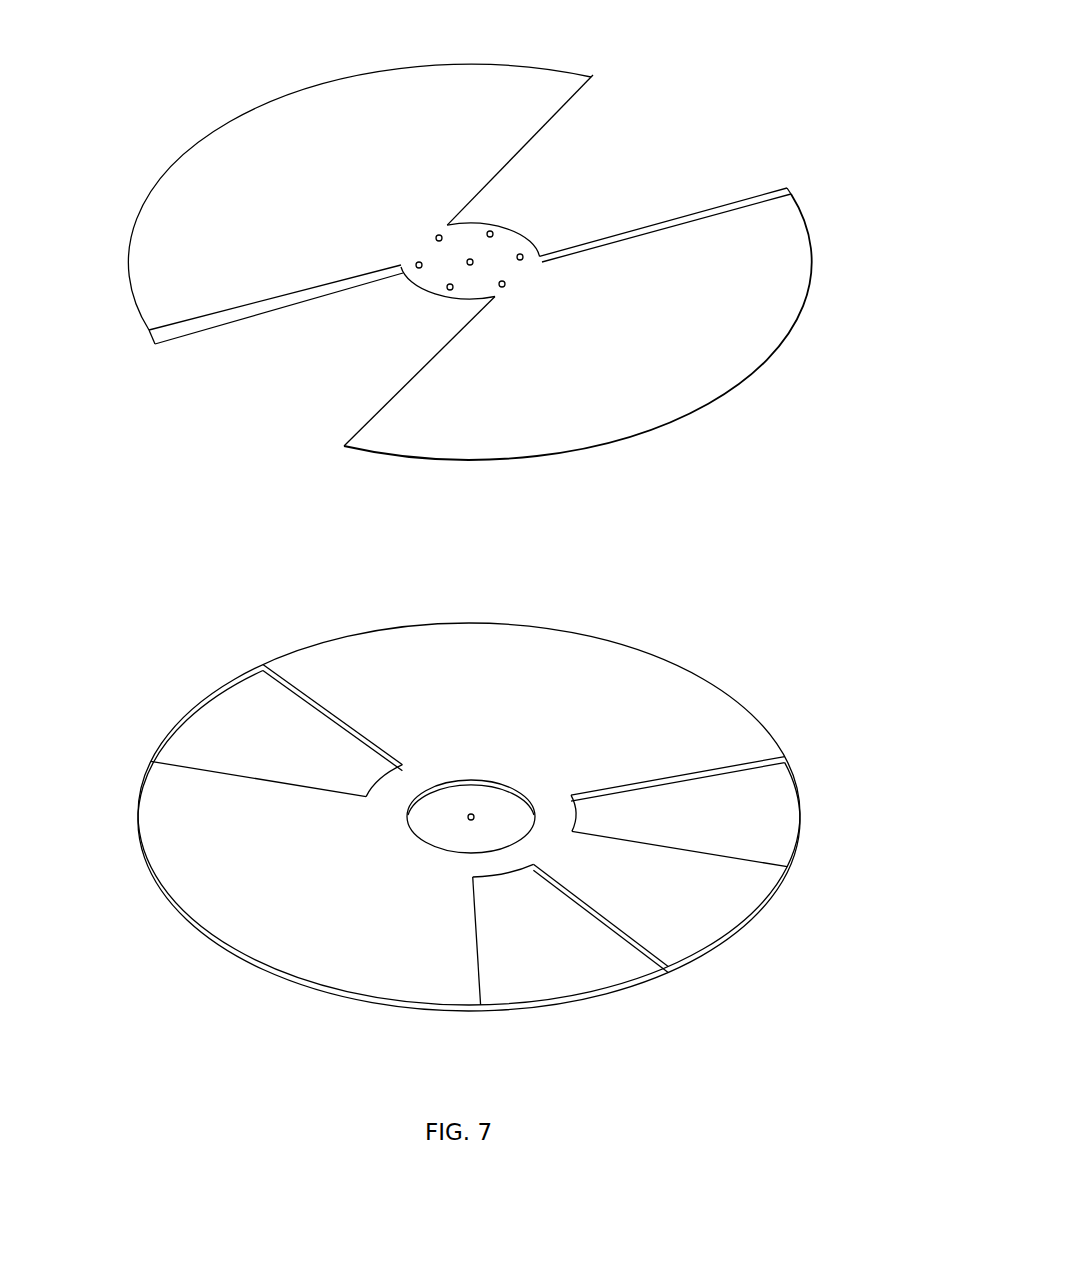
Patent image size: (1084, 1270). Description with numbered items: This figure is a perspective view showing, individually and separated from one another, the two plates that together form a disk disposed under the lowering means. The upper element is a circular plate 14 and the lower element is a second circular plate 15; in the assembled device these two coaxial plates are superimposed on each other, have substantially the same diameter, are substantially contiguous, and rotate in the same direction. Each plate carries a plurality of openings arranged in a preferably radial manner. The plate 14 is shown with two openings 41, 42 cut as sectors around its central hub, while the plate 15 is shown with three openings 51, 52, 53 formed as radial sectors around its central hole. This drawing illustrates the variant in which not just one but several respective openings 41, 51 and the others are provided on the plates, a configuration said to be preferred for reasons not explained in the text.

The circular plate 14 is at (282, 93).
The opening 41 is at (315, 357).
The opening 42 is at (630, 143).
The circular plate 15 is at (660, 653).
The opening 51 is at (253, 728).
The opening 52 is at (575, 958).
The opening 53 is at (723, 798).